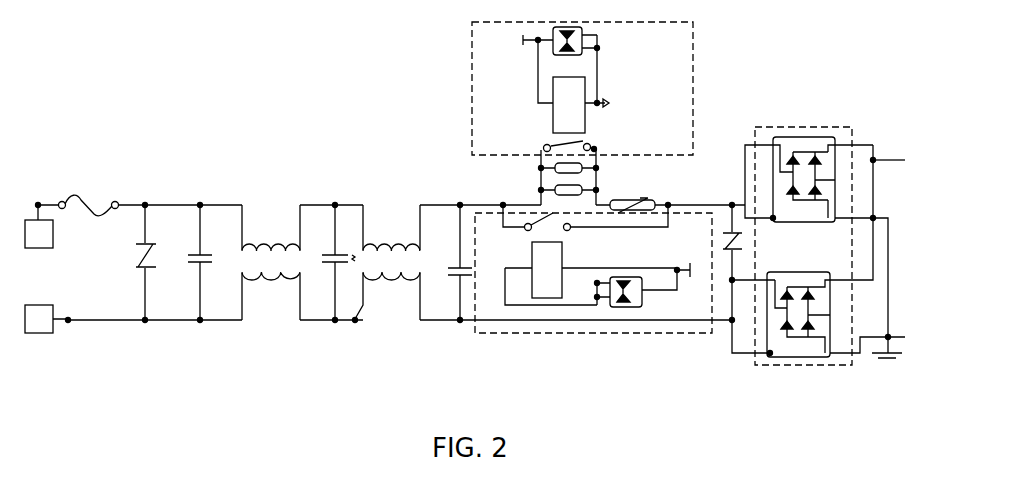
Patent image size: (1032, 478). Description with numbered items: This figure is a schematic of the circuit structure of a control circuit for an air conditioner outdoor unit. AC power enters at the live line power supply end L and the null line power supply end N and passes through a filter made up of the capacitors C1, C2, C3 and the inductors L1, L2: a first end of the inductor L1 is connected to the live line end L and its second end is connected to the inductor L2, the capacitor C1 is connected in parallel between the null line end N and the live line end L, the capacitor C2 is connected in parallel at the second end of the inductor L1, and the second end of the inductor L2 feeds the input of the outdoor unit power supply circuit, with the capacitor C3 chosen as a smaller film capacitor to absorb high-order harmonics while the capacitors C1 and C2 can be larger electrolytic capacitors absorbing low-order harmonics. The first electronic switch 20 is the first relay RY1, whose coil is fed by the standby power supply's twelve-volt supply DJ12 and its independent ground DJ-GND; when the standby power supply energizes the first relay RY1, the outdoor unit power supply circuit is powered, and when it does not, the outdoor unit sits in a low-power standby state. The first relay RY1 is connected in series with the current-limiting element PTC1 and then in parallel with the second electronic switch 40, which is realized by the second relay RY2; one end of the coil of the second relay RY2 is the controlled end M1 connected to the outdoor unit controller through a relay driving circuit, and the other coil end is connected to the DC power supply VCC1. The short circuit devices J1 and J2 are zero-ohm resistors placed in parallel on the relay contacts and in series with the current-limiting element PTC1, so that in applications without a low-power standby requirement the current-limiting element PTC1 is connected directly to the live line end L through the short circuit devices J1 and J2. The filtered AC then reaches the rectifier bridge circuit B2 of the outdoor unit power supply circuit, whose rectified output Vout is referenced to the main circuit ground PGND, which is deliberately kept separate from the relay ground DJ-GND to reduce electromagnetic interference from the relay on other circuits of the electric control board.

The first electronic switch 20 is at (548, 88).
The second electronic switch 40 is at (564, 186).
The rectifier bridge circuit B2 is at (821, 238).
The controlled end of the second electronic switch M1 is at (593, 273).
The live line power supply end L is at (39, 226).
The null line power supply end N is at (39, 319).
The capacitor C1 is at (211, 262).
The capacitor C2 is at (330, 262).
The capacitor C3 is at (448, 262).
The inductor L1 is at (271, 262).
The inductor L2 is at (387, 262).
The short circuit device J1 is at (554, 207).
The short circuit device J2 is at (570, 152).
The first relay RY1 is at (546, 105).
The second relay RY2 is at (564, 266).
The current-limiting element PTC1 is at (632, 195).
The DC power supply VCC1 is at (682, 255).
The 12V power supply DJ12 is at (514, 42).
The independent ground DJ-GND is at (645, 107).
The output voltage Vout is at (895, 153).
The ground of the outdoor unit main circuit PGND is at (883, 357).